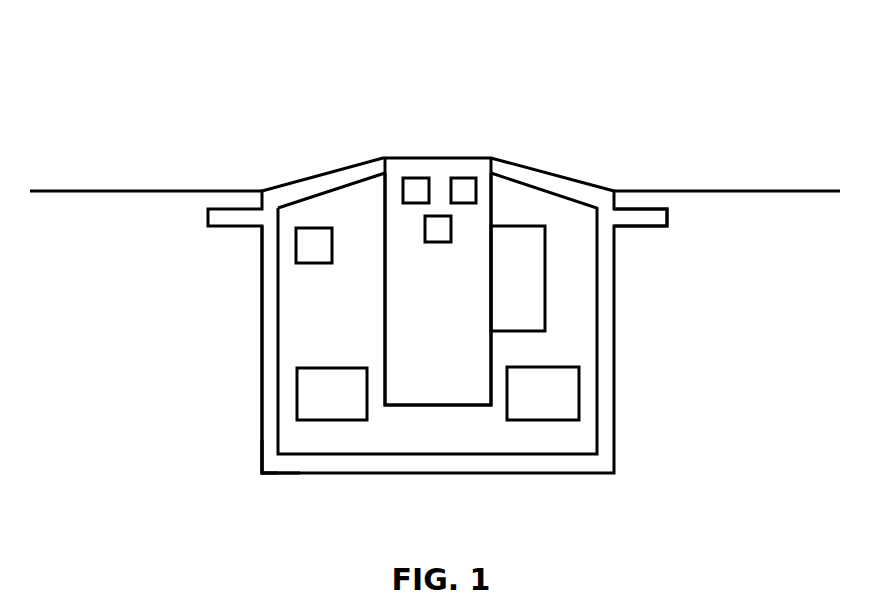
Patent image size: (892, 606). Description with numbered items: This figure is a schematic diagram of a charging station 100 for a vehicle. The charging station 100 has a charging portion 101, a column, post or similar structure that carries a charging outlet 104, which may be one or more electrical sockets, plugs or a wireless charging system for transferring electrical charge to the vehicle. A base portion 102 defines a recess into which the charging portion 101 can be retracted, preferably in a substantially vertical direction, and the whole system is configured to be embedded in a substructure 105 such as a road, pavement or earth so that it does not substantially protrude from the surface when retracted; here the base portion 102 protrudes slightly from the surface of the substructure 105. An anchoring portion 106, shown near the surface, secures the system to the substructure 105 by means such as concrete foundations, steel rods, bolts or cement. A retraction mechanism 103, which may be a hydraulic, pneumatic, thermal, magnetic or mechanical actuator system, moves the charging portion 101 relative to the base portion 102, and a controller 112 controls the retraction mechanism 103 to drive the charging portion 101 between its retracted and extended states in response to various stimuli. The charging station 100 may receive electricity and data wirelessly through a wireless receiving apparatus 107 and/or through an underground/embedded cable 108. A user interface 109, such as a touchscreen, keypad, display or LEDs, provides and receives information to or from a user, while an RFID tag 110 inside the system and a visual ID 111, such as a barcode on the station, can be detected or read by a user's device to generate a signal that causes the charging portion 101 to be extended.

The charging station 100 is at (315, 120).
The charging portion 101 is at (385, 279).
The base portion 102 is at (262, 368).
The retraction mechanism 103 is at (545, 277).
The charging outlet 104 is at (477, 178).
The substructure 105 is at (775, 190).
The anchoring portion 106 is at (667, 217).
The wireless receiving apparatus 107 is at (332, 422).
The underground/embedded cable 108 is at (145, 455).
The user interface 109 is at (437, 216).
The RFID tag 110 is at (296, 243).
The visual ID 111 is at (403, 178).
The controller 112 is at (545, 422).